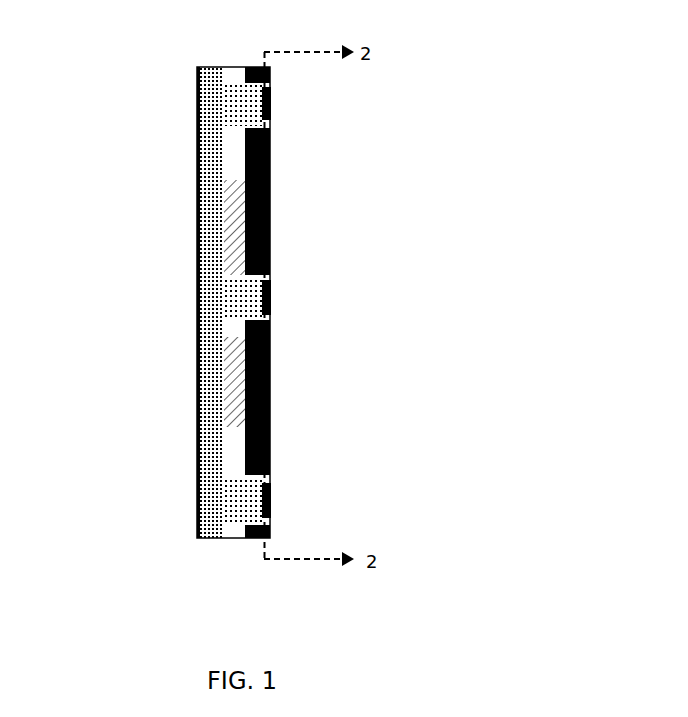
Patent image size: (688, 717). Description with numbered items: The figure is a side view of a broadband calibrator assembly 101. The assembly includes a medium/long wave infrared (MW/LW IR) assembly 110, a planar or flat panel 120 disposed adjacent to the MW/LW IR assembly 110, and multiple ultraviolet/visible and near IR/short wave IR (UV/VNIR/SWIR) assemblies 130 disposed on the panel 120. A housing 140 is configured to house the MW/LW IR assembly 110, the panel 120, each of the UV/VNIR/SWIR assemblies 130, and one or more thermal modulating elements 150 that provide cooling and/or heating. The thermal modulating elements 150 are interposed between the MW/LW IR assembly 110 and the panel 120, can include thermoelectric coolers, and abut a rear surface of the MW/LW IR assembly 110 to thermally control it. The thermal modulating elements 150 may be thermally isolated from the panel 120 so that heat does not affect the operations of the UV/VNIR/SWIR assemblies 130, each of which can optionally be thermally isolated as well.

The broadband calibrator assembly 101 is at (186, 113).
The medium/long wave infrared (MW/LW IR) assembly 110 is at (273, 203).
The panel 120 is at (210, 280).
The UV/VNIR/SWIR assemblies 130 is at (273, 100).
The housing 140 is at (197, 473).
The thermal modulating elements 150 is at (237, 205).